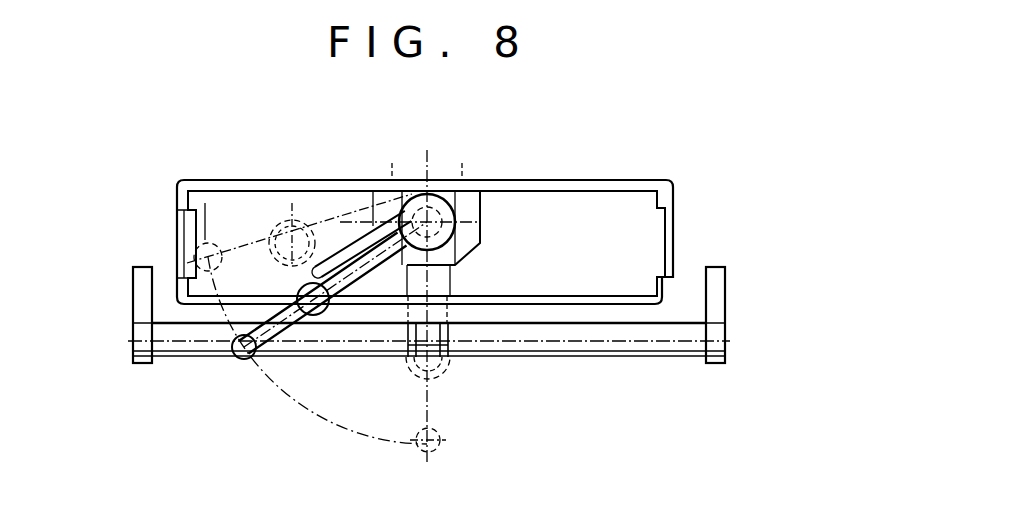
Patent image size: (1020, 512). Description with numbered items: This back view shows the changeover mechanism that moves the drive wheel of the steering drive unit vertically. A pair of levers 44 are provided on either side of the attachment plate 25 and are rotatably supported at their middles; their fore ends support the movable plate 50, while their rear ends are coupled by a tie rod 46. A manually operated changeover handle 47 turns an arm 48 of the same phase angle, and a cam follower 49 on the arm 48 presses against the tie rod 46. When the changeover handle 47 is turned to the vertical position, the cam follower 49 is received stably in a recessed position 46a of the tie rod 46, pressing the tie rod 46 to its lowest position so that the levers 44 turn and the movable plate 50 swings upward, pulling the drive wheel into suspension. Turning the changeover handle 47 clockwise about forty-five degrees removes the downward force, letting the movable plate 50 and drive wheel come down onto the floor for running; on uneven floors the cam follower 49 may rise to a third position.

The attachment plate 25 is at (214, 182).
The levers 44 is at (134, 300).
The tie rod 46 is at (643, 360).
The recessed position 46a is at (447, 352).
The changeover handle 47 is at (255, 355).
The arm 48 is at (336, 210).
The cam follower 49 is at (342, 328).
The movable plate 50 is at (573, 302).